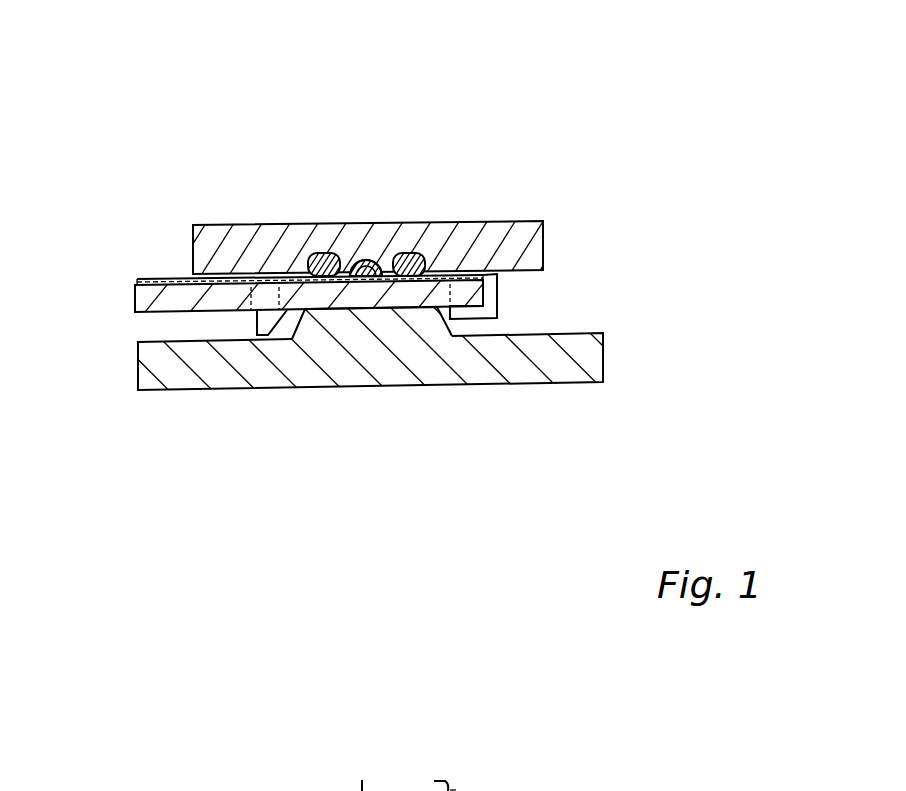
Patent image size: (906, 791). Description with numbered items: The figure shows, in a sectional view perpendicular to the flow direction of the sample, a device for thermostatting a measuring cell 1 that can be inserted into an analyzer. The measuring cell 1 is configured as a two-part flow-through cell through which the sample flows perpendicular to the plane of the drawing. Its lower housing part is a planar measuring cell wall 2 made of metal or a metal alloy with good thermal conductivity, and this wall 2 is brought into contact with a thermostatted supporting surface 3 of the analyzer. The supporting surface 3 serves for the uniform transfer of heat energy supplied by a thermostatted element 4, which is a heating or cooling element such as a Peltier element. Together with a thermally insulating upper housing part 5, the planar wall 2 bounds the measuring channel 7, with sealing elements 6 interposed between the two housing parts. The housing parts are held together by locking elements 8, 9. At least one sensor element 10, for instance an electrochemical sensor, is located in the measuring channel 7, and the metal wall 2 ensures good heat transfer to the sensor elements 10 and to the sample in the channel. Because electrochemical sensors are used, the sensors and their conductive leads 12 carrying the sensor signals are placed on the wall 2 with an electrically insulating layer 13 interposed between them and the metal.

The measuring cell 1 is at (400, 269).
The planar measuring cell wall 2 is at (259, 327).
The thermostatted supporting surface 3 is at (372, 397).
The thermostatted element 4 is at (411, 400).
The thermally insulating upper housing part 5 is at (405, 185).
The sealing elements 6 is at (378, 173).
The measuring channel 7 is at (391, 173).
The locking element 8 is at (225, 399).
The locking element 9 is at (557, 287).
The sensor element 10 is at (349, 159).
The conductive leads 12 is at (267, 204).
The electrically insulating layer 13 is at (248, 241).